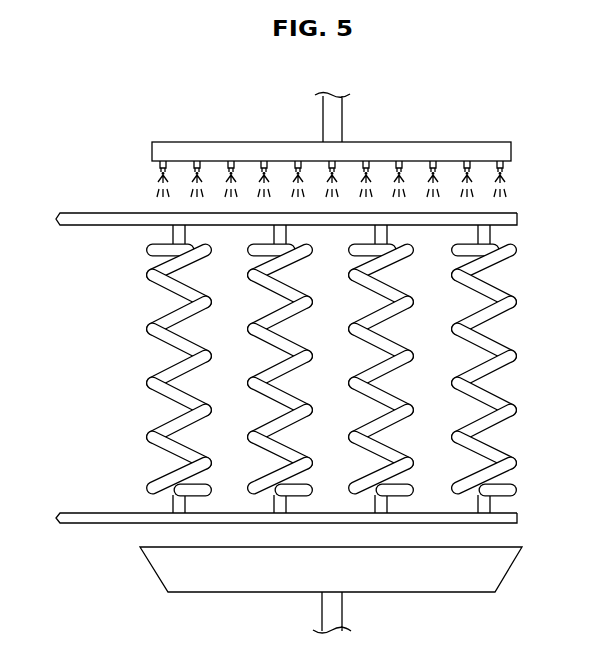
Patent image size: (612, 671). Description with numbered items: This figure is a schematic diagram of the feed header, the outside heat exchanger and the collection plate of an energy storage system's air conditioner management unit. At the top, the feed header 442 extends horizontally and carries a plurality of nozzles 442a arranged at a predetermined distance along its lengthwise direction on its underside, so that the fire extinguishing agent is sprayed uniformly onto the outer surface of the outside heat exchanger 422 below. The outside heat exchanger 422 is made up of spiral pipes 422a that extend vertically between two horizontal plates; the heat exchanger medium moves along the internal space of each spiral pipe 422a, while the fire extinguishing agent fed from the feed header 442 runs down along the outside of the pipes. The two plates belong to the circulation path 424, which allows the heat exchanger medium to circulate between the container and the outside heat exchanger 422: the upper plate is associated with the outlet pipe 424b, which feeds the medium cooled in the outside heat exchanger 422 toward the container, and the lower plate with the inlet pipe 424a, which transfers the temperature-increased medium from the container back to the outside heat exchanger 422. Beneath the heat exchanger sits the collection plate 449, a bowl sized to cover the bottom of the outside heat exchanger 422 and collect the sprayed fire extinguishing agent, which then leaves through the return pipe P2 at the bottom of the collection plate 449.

The feed header 442 is at (366, 141).
The nozzles 442a is at (504, 169).
The outside heat exchanger 422 is at (378, 369).
The spiral pipe 422a is at (515, 302).
The circulation path 424 is at (266, 368).
The inlet pipe 424a is at (286, 475).
The outlet pipe 424b is at (95, 226).
The collection plate 449 is at (512, 566).
The return pipe P2 is at (343, 610).